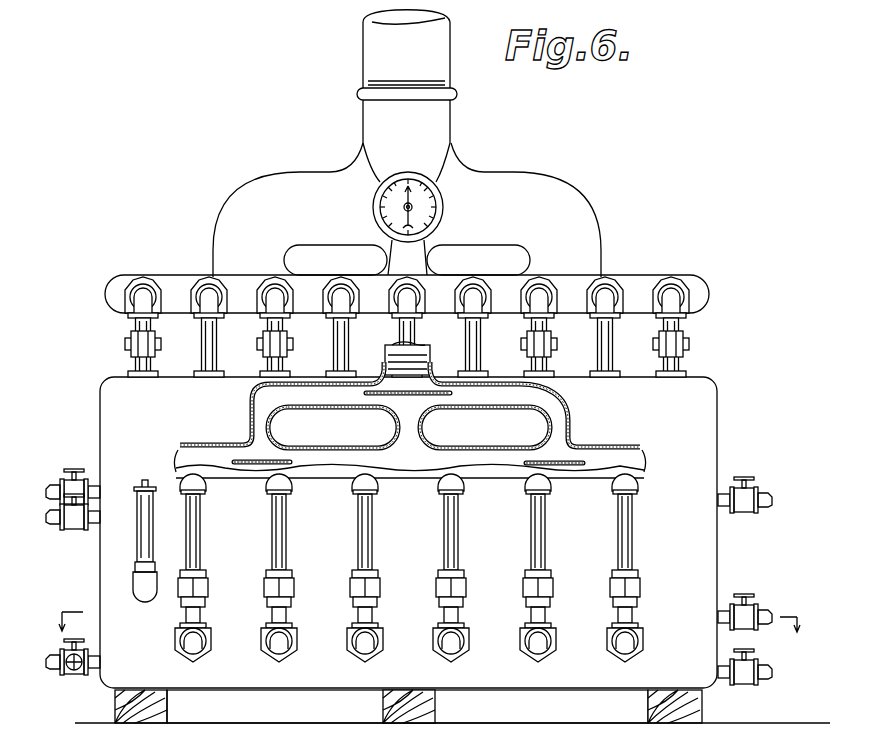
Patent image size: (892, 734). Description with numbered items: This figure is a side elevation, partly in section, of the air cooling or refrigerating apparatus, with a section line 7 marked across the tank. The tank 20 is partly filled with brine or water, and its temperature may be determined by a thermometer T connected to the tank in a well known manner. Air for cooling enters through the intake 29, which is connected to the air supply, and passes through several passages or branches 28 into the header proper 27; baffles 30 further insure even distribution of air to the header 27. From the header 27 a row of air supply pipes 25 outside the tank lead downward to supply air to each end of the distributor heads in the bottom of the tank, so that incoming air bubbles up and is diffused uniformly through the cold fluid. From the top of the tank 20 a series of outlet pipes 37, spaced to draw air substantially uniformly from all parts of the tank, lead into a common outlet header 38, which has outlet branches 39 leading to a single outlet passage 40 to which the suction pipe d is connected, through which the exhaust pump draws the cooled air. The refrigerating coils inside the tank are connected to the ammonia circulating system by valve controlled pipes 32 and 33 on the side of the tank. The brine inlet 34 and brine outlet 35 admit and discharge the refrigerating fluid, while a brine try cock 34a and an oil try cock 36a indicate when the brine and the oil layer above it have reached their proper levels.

The suction pipe d is at (363, 50).
The outlet passage 40 is at (435, 118).
The outlet branches 39 is at (407, 210).
The outlet header 38 is at (168, 278).
The outlet pipes 37 is at (220, 350).
The intake 29 is at (433, 363).
The tank 20 is at (108, 418).
The header branches 28 is at (250, 412).
The air supply header 27 is at (606, 446).
The baffles 30 is at (278, 460).
The air supply pipes 25 is at (273, 530).
The thermometer T is at (138, 528).
The oil try cock 36a is at (70, 486).
The brine try cock 34a is at (67, 524).
The brine inlet 34 is at (62, 678).
The valve controlled pipe 33 is at (758, 496).
The valve controlled pipe 32 is at (757, 612).
The brine outlet 35 is at (757, 682).
The section line 7- 7 is at (415, 615).